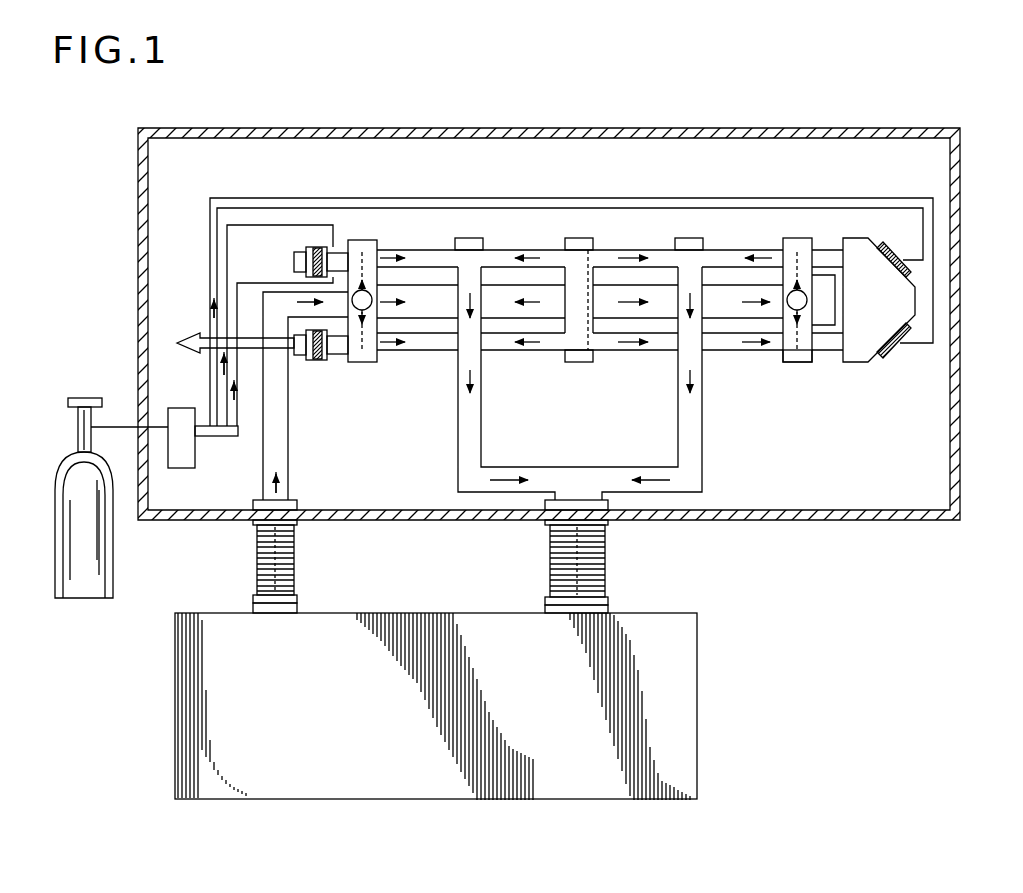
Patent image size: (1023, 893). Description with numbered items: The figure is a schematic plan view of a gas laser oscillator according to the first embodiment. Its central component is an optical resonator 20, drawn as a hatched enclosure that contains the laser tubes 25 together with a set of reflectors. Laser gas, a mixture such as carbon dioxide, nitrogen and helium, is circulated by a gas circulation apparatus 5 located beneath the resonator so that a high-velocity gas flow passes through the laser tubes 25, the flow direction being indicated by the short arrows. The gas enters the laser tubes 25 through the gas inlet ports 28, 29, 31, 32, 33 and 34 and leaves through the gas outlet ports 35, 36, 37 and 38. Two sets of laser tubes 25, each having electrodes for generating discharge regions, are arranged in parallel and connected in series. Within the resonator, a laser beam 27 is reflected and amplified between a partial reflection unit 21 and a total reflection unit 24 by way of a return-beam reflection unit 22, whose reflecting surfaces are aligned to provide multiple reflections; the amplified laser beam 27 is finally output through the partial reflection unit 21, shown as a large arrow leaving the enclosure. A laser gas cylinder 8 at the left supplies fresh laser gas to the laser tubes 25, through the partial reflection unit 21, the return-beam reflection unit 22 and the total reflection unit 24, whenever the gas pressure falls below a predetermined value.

The gas circulation apparatus 5 is at (690, 707).
The laser gas cylinder 8 is at (80, 592).
The optical resonator 20 is at (665, 128).
The partial reflection unit 21 is at (315, 358).
The return-beam reflection unit 22 is at (892, 302).
The total reflection unit 24 is at (313, 247).
The laser tube 25 is at (636, 250).
The laser beam 27 is at (200, 335).
The gas inlet port 28 is at (377, 350).
The gas inlet port 29 is at (588, 362).
The gas inlet port 31 is at (800, 362).
The gas inlet port 32 is at (797, 250).
The gas inlet port 33 is at (588, 250).
The gas inlet port 34 is at (362, 250).
The gas outlet port 35 is at (474, 353).
The gas outlet port 36 is at (696, 353).
The gas outlet port 37 is at (690, 272).
The gas outlet port 38 is at (470, 272).